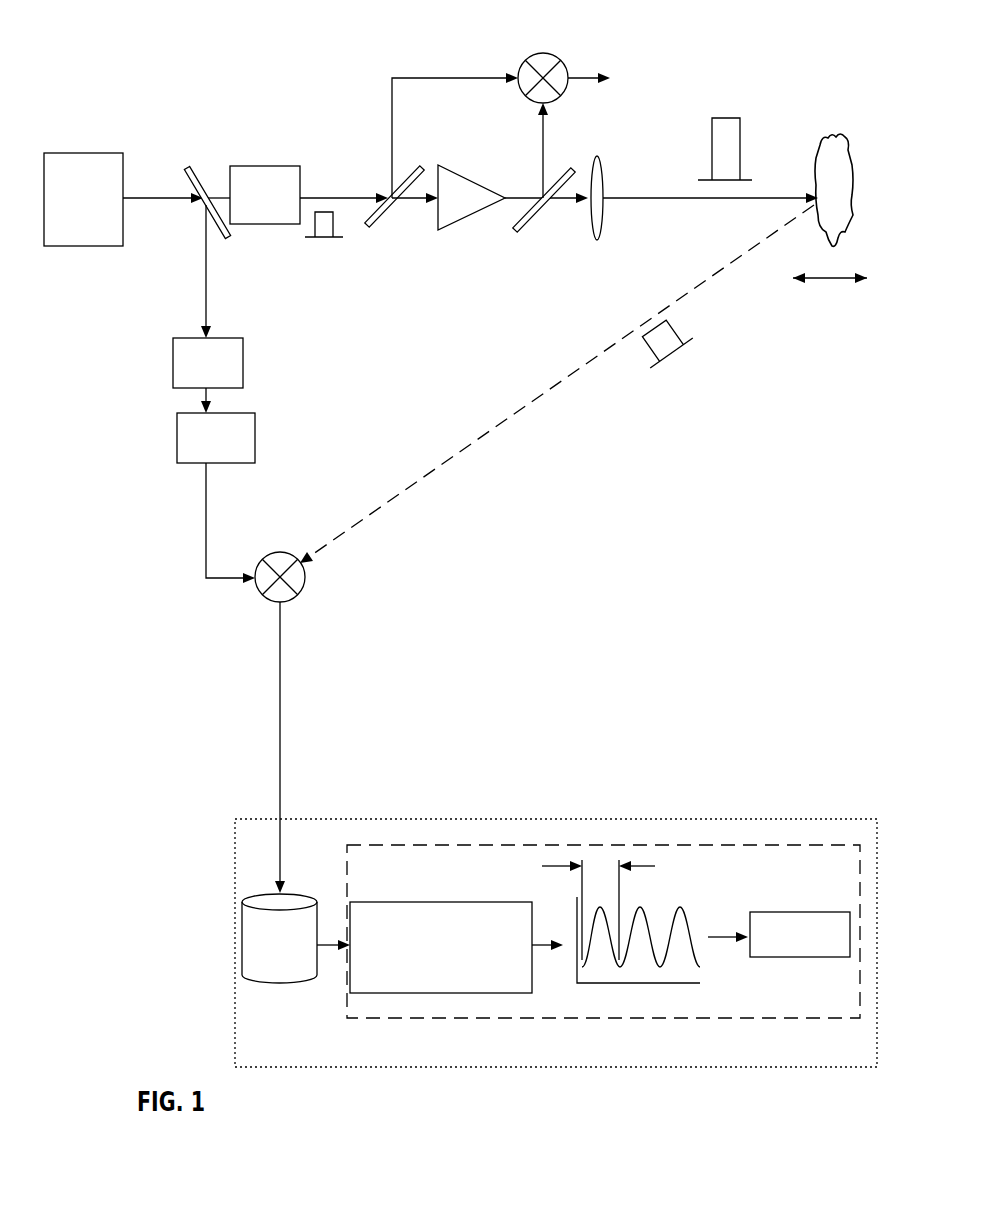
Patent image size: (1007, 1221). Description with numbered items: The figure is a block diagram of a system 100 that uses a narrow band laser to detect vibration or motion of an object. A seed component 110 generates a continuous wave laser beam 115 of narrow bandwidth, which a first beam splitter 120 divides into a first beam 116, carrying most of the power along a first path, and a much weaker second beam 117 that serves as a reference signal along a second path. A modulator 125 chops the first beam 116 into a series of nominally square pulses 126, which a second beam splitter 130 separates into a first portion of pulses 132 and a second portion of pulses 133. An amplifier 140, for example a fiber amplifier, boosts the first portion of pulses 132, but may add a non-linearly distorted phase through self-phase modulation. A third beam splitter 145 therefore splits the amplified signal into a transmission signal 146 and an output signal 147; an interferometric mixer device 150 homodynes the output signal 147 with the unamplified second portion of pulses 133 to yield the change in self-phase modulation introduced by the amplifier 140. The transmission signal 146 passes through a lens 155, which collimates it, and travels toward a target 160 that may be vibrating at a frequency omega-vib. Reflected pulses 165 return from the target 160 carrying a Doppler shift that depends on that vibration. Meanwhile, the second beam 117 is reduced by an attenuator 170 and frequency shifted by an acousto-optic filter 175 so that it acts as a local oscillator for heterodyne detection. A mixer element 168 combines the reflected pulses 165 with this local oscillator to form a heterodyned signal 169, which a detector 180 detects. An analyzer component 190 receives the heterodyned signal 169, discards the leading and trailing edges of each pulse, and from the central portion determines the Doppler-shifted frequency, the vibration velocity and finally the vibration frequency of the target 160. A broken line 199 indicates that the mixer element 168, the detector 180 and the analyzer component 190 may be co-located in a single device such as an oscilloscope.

The system 100 is at (165, 31).
The seed component 110 is at (83, 199).
The laser beam 115 is at (158, 197).
The first beam 116 is at (220, 197).
The second beam 117 is at (203, 300).
The first beam splitter 120 is at (198, 194).
The modulator 125 is at (265, 195).
The square pulses 126 is at (317, 197).
The second beam splitter 130 is at (389, 223).
The first portion of pulses 132 is at (412, 200).
The second portion of pulses 133 is at (420, 78).
The amplifier 140 is at (468, 216).
The third beam splitter 145 is at (540, 208).
The transmission signal 146 is at (560, 200).
The output signal 147 is at (543, 134).
The interferometric mixer device 150 is at (557, 102).
The lens 155 is at (603, 170).
The target 160 is at (820, 145).
The reflected pulses 165 is at (708, 277).
The mixer element 168 is at (267, 603).
The heterodyned signal 169 is at (278, 727).
The attenuator 170 is at (175, 365).
The acousto-optic filter 175 is at (177, 432).
The detector 180 is at (296, 938).
The analyzer component 190 is at (435, 1022).
The broken line 199 is at (503, 820).